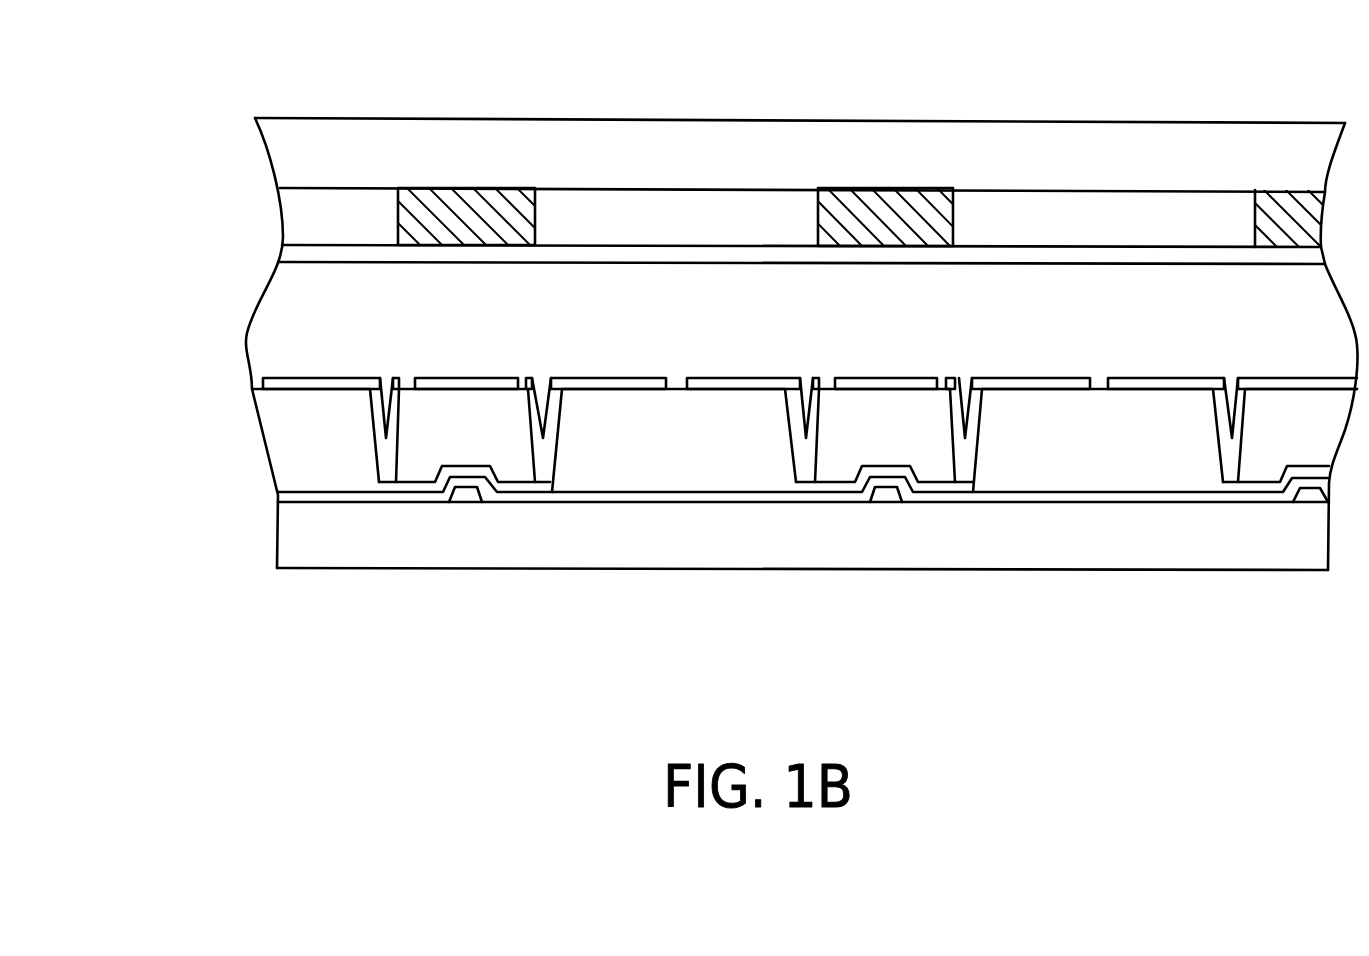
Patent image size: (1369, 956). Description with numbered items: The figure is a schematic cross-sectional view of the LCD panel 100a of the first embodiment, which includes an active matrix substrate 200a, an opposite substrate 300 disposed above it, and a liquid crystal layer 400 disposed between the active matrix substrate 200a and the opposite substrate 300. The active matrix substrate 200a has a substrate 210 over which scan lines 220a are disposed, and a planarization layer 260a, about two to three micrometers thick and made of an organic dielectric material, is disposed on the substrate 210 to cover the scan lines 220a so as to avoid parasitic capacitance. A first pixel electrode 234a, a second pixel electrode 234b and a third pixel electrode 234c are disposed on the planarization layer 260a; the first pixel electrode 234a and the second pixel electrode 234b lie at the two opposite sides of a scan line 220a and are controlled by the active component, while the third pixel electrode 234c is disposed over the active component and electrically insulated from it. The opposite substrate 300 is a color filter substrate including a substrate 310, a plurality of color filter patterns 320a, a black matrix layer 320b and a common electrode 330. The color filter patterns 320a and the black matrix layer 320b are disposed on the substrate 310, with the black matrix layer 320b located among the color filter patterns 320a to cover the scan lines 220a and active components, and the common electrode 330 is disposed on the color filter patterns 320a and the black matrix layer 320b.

The LCD panel 100a is at (1148, 648).
The active matrix substrate 200a is at (156, 493).
The substrate 210 is at (286, 538).
The scan lines 220a is at (466, 494).
The first pixel electrode 234a is at (253, 383).
The second pixel electrode 234b is at (628, 384).
The third pixel electrode 234c is at (470, 383).
The planarization layer 260a is at (265, 423).
The opposite substrate 300 is at (158, 137).
The substrate 310 is at (268, 152).
The color filter patterns 320a is at (283, 212).
The black matrix layer 320b is at (397, 219).
The common electrode 330 is at (280, 253).
The liquid crystal layer 400 is at (252, 334).